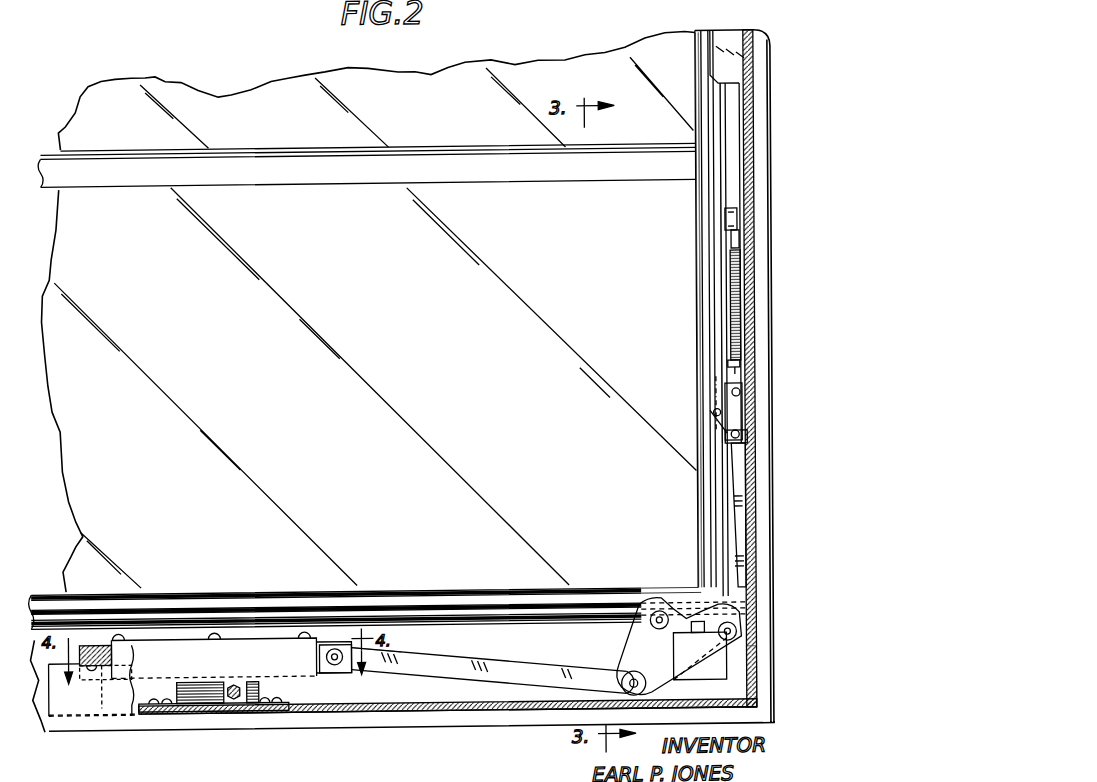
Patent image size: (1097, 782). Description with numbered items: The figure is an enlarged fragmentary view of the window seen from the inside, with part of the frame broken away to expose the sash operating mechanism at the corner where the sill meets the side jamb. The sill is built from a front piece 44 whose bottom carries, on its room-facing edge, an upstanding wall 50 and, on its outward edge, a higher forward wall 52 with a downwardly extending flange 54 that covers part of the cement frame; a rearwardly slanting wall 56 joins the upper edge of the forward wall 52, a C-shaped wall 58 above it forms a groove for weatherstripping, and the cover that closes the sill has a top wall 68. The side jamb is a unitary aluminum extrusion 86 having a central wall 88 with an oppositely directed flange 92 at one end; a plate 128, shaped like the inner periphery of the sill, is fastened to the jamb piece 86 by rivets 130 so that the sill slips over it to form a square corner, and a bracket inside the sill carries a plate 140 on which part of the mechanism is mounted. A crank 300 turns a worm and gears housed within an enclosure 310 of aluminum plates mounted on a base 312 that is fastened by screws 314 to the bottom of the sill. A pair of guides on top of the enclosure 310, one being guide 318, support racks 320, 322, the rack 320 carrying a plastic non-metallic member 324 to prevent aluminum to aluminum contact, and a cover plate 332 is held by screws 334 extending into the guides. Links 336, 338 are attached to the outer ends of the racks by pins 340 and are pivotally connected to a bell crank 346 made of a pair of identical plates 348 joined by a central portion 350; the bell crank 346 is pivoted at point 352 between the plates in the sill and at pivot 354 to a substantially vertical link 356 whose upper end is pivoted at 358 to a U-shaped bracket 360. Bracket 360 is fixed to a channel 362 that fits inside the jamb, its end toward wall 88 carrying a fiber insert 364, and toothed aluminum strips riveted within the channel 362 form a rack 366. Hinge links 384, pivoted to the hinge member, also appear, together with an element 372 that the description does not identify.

The front piece 44 is at (200, 724).
The upstanding wall 50 is at (85, 698).
The forward wall 52 is at (498, 650).
The flange 54 is at (392, 722).
The rearwardly slanting wall 56 is at (415, 620).
The wall 58 is at (445, 604).
The top wall 68 is at (508, 592).
The jamb piece 86 is at (762, 493).
The central wall 88 is at (755, 532).
The flange 92 is at (763, 603).
The plate 128 is at (752, 656).
The rivets 130 is at (730, 696).
The plate 140 is at (672, 606).
The crank 300 is at (236, 698).
The enclosure 310 is at (187, 694).
The base 312 is at (222, 712).
The screws 314 is at (288, 704).
The guide 318 is at (232, 648).
The rack 320 is at (348, 636).
The rack 322 is at (100, 642).
The non-metallic member 324 is at (312, 634).
The cover plate 332 is at (150, 658).
The screws 334 is at (120, 650).
The link 336 is at (522, 672).
The link 338 is at (37, 673).
The pins 340 is at (350, 664).
The bell crank 346 is at (640, 653).
The plates 348 is at (699, 656).
The central portion 350 is at (668, 688).
The pivot point 352 is at (642, 612).
The pivot 354 is at (735, 637).
The link 356 is at (722, 494).
The pivot 358 is at (717, 414).
The U-shaped bracket 360 is at (727, 392).
The channel 362 is at (722, 300).
The fiber insert 364 is at (745, 404).
The rack 366 is at (732, 274).
The spring cap 372 is at (733, 242).
The hinge links 384 is at (727, 224).